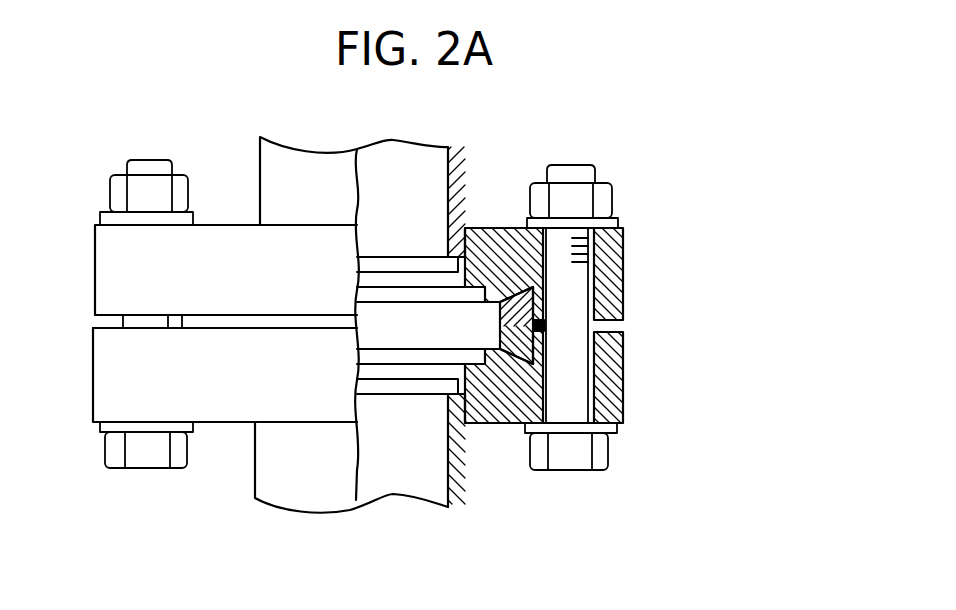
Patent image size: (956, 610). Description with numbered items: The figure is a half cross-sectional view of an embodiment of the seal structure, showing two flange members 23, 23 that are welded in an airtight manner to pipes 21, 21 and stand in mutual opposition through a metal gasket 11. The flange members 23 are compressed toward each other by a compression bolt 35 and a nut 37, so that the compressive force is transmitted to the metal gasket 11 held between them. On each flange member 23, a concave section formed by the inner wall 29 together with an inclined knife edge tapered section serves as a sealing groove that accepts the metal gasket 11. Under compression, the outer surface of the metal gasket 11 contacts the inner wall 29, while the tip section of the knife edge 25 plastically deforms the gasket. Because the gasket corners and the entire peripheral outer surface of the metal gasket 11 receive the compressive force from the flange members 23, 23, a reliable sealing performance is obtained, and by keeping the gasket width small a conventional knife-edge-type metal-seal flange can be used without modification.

The metal gasket 11 is at (535, 305).
The pipe 21 is at (465, 190).
The flange member 23 is at (510, 226).
The knife edge 25 is at (480, 300).
The inner wall 29 is at (517, 286).
The compression bolt 35 is at (608, 458).
The nut 37 is at (613, 190).